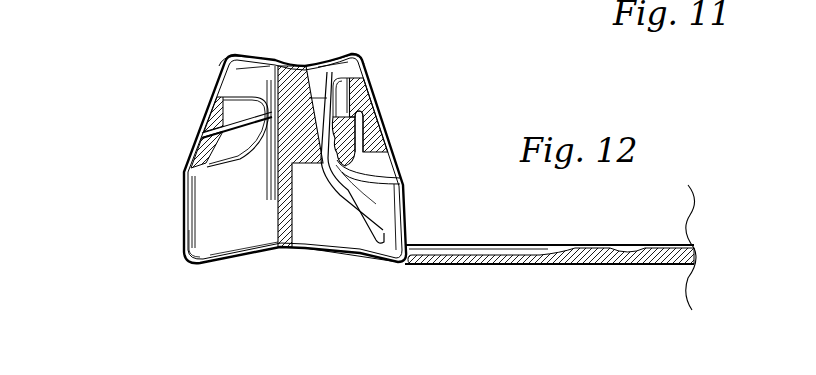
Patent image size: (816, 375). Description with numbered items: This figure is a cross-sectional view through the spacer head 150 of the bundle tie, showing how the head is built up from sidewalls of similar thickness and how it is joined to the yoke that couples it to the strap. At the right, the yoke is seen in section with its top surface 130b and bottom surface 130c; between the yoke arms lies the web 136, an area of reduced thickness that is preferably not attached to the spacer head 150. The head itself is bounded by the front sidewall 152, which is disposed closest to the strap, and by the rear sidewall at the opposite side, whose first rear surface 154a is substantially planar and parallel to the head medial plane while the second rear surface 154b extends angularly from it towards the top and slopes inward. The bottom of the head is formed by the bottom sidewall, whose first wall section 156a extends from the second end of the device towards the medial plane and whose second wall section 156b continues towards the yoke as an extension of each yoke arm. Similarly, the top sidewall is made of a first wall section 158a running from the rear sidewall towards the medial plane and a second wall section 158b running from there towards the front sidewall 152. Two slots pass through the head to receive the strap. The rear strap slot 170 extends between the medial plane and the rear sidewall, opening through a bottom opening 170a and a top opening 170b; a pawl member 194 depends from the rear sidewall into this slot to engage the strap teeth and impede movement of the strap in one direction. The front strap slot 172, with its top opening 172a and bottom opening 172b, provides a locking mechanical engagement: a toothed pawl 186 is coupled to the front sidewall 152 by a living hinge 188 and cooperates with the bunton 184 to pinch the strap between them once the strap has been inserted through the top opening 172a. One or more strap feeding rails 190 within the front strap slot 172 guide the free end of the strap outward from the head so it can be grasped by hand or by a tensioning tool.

The top surface 130b is at (483, 245).
The bottom surface 130c is at (498, 264).
The web 136 is at (425, 265).
The spacer head 150 is at (165, 158).
The front sidewall 152 is at (365, 100).
The first rear surface 154a is at (186, 230).
The second rear surface 154b is at (213, 89).
The first wall section 156a is at (215, 265).
The second wall section 156b is at (367, 260).
The first wall section 158a is at (248, 56).
The second wall section 158b is at (337, 54).
The rear strap slot 170 is at (218, 217).
The bottom opening 170a is at (210, 245).
The top opening 170b is at (243, 77).
The front strap slot 172 is at (363, 198).
The top opening 172a is at (343, 68).
The bottom opening 172b is at (350, 182).
The bunton 184 is at (292, 153).
The toothed pawl 186 is at (343, 137).
The living hinge 188 is at (357, 120).
The strap feeding rail 190 is at (348, 170).
The pawl member 194 is at (213, 119).